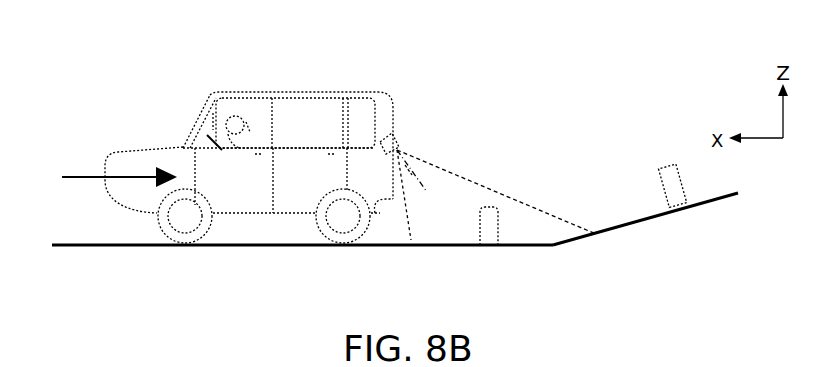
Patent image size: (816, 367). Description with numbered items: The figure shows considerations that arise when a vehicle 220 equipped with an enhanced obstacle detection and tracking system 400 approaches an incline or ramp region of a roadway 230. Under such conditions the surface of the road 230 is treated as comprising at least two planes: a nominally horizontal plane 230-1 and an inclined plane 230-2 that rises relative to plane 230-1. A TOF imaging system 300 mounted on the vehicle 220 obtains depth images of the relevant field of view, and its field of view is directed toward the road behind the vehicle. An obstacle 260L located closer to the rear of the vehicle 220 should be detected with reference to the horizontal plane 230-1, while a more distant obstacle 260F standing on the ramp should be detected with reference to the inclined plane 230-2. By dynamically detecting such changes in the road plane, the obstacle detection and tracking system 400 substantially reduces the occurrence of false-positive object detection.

The vehicle 220 is at (138, 143).
The roadway 230 is at (86, 235).
The nominally horizontal plane 230-1 is at (440, 248).
The inclined plane 230-2 is at (627, 231).
The obstacle 260L is at (491, 206).
The obstacle 260F is at (668, 165).
The TOF imaging system 300 is at (398, 142).
The enhanced obstacle detection and tracking system 400 is at (425, 69).